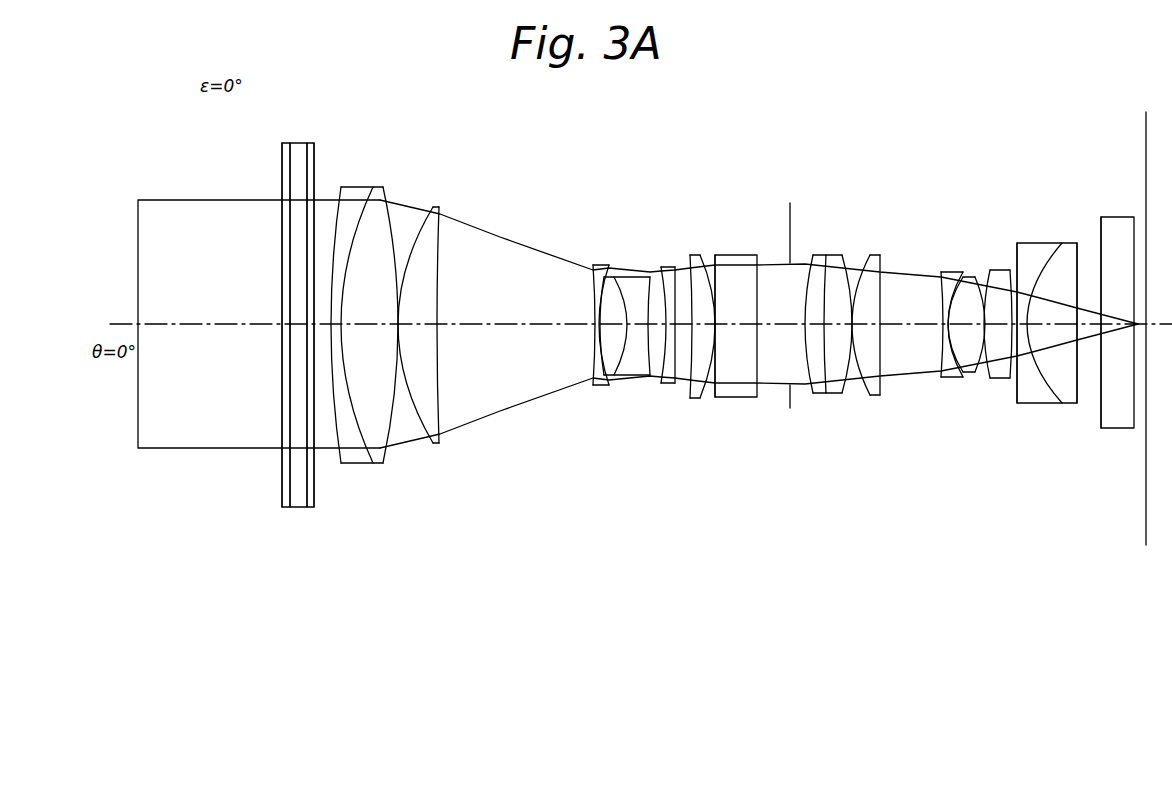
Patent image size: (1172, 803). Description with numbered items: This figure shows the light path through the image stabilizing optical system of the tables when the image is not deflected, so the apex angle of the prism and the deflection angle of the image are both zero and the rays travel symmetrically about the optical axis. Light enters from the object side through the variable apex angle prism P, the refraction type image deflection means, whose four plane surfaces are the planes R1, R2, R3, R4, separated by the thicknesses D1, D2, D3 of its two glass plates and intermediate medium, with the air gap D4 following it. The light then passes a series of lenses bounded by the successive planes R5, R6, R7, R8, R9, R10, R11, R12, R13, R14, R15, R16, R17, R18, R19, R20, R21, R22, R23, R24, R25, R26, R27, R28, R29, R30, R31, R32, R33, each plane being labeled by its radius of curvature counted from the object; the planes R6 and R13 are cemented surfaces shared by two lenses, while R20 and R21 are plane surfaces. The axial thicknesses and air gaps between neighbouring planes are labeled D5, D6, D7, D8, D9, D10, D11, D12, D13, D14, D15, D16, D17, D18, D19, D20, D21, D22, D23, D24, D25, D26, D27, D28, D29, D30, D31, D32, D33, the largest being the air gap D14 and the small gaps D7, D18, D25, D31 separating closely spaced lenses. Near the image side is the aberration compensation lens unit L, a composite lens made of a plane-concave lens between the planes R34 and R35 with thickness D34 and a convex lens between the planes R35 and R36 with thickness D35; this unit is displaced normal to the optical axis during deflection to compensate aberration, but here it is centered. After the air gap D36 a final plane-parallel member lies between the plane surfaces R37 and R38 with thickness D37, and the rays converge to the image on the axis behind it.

The variable apex angle prism P is at (299, 281).
The aberration compensation lens unit L is at (1048, 243).
The radius of curvature of first plane R1 is at (282, 160).
The radius of curvature of second plane R2 is at (290, 150).
The radius of curvature of third plane R3 is at (307, 160).
The radius of curvature of fourth plane R4 is at (314, 150).
The radius of curvature of fifth plane R5 is at (341, 187).
The radius of curvature of sixth plane R6 is at (370, 187).
The radius of curvature of seventh plane R7 is at (386, 190).
The radius of curvature of eighth plane R8 is at (433, 207).
The radius of curvature of ninth plane R9 is at (442, 212).
The radius of curvature of tenth plane R10 is at (593, 265).
The radius of curvature of eleventh plane R11 is at (607, 265).
The radius of curvature of twelfth plane R12 is at (604, 277).
The radius of curvature of thirteenth plane R13 is at (614, 277).
The radius of curvature of fourteenth plane R14 is at (650, 277).
The radius of curvature of fifteenth plane R15 is at (661, 267).
The radius of curvature of sixteenth plane R16 is at (675, 267).
The radius of curvature of seventeenth plane R17 is at (690, 255).
The radius of curvature of eighteenth plane R18 is at (702, 255).
The radius of curvature of nineteenth plane R19 is at (716, 255).
The radius of curvature of twentieth plane R20 is at (772, 241).
The radius of curvature of twenty-first plane R21 is at (790, 203).
The radius of curvature of twenty-second plane R22 is at (813, 255).
The radius of curvature of twenty-third plane R23 is at (826, 255).
The radius of curvature of twenty-fourth plane R24 is at (842, 255).
The radius of curvature of twenty-fifth plane R25 is at (870, 255).
The radius of curvature of twenty-sixth plane R26 is at (880, 255).
The radius of curvature of twenty-seventh plane R27 is at (941, 272).
The radius of curvature of twenty-eighth plane R28 is at (958, 272).
The radius of curvature of twenty-ninth plane R29 is at (964, 277).
The radius of curvature of thirtieth plane R30 is at (975, 277).
The radius of curvature of thirty-first plane R31 is at (990, 270).
The radius of curvature of thirty-second plane R32 is at (1010, 270).
The radius of curvature of thirty-third plane R33 is at (1017, 243).
The radius of curvature of thirty-fourth plane R34 is at (1062, 243).
The radius of curvature of thirty-fifth plane R35 is at (1077, 243).
The radius of curvature of thirty-sixth plane R36 is at (1101, 217).
The radius of curvature of thirty-seventh plane R37 is at (1103, 217).
The radius of curvature of thirty-eighth plane R38 is at (1133, 145).
The axial thickness between first and second planes D1 is at (283, 335).
The axial thickness between second and third planes D2 is at (297, 335).
The axial thickness between third and fourth planes D3 is at (309, 335).
The axial air gap between fourth and fifth planes D4 is at (320, 335).
The axial thickness between fifth and sixth planes D5 is at (337, 335).
The axial thickness between sixth and seventh planes D6 is at (368, 335).
The axial air gap between seventh and eighth planes D7 is at (398, 345).
The axial thickness between eighth and ninth planes D8 is at (432, 335).
The axial air gap between ninth and tenth planes D9 is at (503, 335).
The axial thickness between tenth and eleventh planes D10 is at (597, 335).
The axial air gap between eleventh and twelfth planes D11 is at (603, 335).
The axial thickness between twelfth and thirteenth planes D12 is at (614, 335).
The axial thickness between thirteenth and fourteenth planes D13 is at (630, 335).
The axial air gap between fourteenth and fifteenth planes D14 is at (647, 335).
The axial thickness between fifteenth and sixteenth planes D15 is at (668, 335).
The axial air gap between sixteenth and seventeenth planes D16 is at (684, 335).
The axial thickness between seventeenth and eighteenth planes D17 is at (703, 335).
The axial air gap between eighteenth and nineteenth planes D18 is at (717, 335).
The axial thickness between nineteenth and twentieth planes D19 is at (753, 398).
The axial air gap between twentieth and twenty-first planes D20 is at (773, 390).
The axial air gap between twenty-first and twenty-second planes D21 is at (791, 395).
The axial thickness between twenty-second and twenty-third planes D22 is at (814, 335).
The axial air gap between twenty-third and twenty-fourth planes D23 is at (832, 335).
The axial thickness between twenty-fourth and twenty-fifth planes D24 is at (850, 335).
The axial air gap between twenty-fifth and twenty-sixth planes D25 is at (863, 335).
The axial thickness between twenty-sixth and twenty-seventh planes D26 is at (886, 335).
The axial air gap between twenty-seventh and twenty-eighth planes D27 is at (900, 345).
The axial thickness between twenty-eighth and twenty-ninth planes D28 is at (944, 337).
The axial air gap between twenty-ninth and thirtieth planes D29 is at (962, 335).
The axial thickness between thirtieth and thirty-first planes D30 is at (975, 335).
The axial air gap between thirty-first and thirty-second planes D31 is at (986, 335).
The axial thickness between thirty-second and thirty-third planes D32 is at (1000, 335).
The axial air gap between thirty-third and thirty-fourth planes D33 is at (1012, 340).
The axial thickness between thirty-fourth and thirty-fifth planes D34 is at (1030, 340).
The axial thickness between thirty-fifth and thirty-sixth planes D35 is at (1045, 406).
The axial air gap between thirty-sixth and thirty-seventh planes D36 is at (1085, 337).
The axial thickness between thirty-seventh and thirty-eighth planes D37 is at (1120, 335).